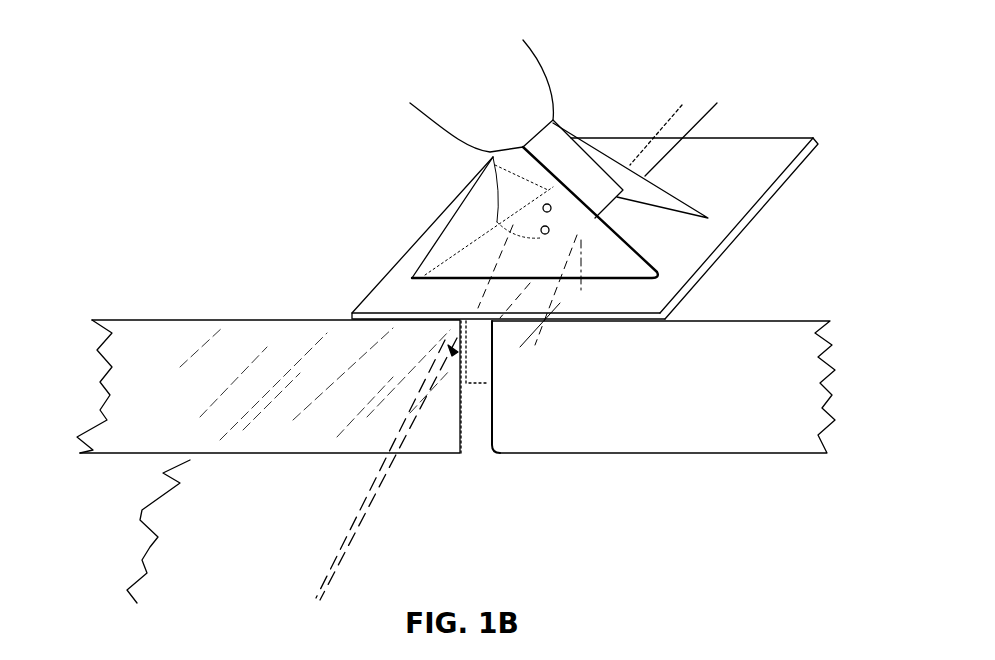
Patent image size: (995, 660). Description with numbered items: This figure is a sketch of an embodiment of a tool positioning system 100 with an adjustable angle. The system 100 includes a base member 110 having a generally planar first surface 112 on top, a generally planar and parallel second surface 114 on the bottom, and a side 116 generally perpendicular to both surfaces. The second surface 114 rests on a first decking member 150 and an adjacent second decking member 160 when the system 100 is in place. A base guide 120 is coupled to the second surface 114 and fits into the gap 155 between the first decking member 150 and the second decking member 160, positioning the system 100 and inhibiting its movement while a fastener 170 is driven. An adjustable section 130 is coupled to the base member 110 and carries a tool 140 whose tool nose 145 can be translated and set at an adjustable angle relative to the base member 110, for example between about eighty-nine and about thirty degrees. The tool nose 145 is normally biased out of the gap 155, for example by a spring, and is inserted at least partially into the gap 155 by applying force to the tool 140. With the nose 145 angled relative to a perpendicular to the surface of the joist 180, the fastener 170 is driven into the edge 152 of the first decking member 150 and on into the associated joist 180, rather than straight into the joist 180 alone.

The tool positioning system 100 is at (205, 116).
The base member 110 is at (599, 204).
The first surface 112 is at (772, 158).
The second surface 114 is at (713, 267).
The side 116 is at (775, 187).
The base guide 120 is at (473, 345).
The adjustable section 130 is at (518, 207).
The tool 140 is at (409, 82).
The tool nose 145 is at (608, 218).
The first decking member 150 is at (260, 340).
The edge 152 is at (468, 417).
The gap 155 is at (695, 106).
The second decking member 160 is at (667, 440).
The fastener 170 is at (377, 507).
The joist 180 is at (177, 550).